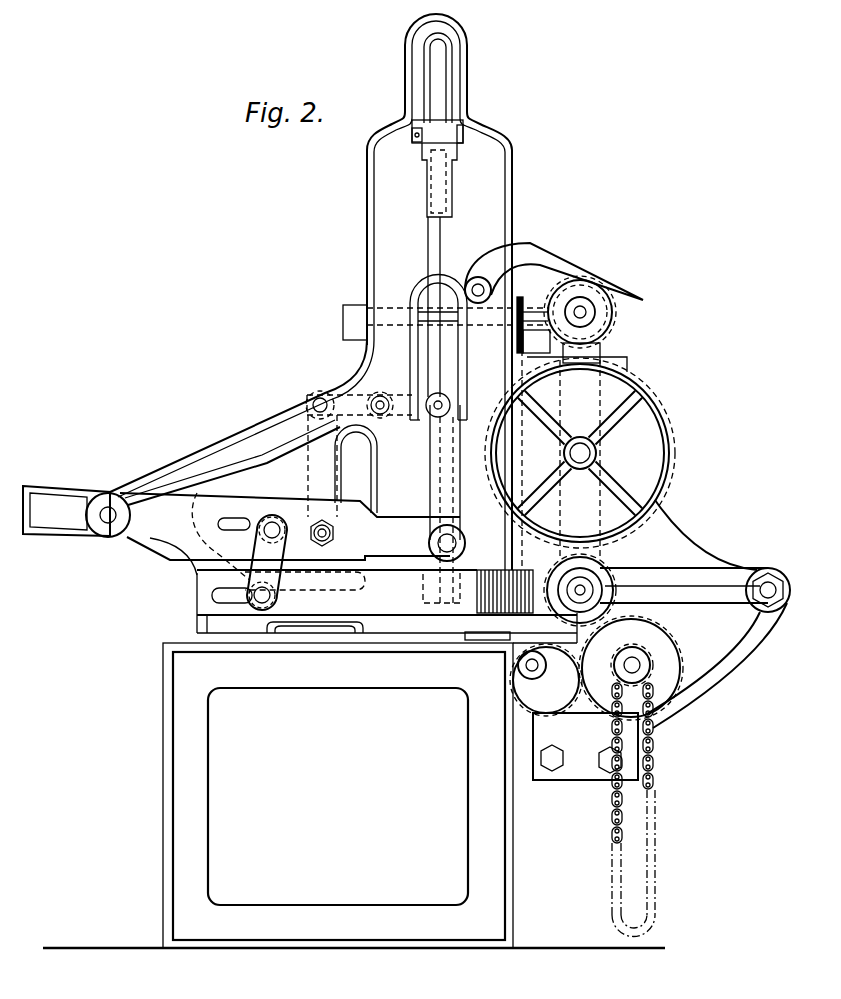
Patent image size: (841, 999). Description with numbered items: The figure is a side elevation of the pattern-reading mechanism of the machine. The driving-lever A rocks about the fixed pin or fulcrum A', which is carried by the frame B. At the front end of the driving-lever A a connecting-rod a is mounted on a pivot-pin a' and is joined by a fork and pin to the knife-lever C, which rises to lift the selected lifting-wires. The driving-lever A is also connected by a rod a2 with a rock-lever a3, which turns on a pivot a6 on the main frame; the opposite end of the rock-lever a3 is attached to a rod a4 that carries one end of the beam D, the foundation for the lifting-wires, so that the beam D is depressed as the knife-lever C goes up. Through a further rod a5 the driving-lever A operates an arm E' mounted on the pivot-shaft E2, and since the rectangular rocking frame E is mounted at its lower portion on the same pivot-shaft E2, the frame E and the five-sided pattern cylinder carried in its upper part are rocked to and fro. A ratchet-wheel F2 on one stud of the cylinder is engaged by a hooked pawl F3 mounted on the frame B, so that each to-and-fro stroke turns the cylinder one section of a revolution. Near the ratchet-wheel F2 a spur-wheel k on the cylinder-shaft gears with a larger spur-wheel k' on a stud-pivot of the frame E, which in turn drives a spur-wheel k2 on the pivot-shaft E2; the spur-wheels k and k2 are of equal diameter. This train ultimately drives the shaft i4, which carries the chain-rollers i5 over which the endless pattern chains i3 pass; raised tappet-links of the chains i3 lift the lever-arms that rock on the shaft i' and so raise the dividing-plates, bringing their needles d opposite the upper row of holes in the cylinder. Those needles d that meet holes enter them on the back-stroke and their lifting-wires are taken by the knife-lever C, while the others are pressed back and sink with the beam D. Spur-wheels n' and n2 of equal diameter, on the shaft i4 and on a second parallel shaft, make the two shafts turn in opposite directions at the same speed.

The frame B is at (490, 176).
The knife-lever C is at (450, 128).
The connecting-rod a is at (387, 348).
The needles d is at (533, 306).
The hooked pawl F3 is at (535, 256).
The ratchet-wheel F2 is at (613, 318).
The spur-wheel k is at (590, 300).
The rock-lever a3 is at (329, 397).
The pivot a6 is at (379, 396).
The rod a2 is at (342, 466).
The rod a4 is at (438, 440).
The beam D is at (440, 521).
The pivot-pin a' is at (464, 544).
The fixed pin or fulcrum A' is at (76, 491).
The driving-lever A is at (290, 540).
The rod a5 is at (290, 562).
The arm E' is at (387, 605).
The rectangular rocking frame E is at (580, 460).
The larger spur-wheel k' is at (600, 453).
The pivot-shaft E2 is at (600, 596).
The spur-wheel k2 is at (603, 580).
The shaft i' is at (719, 614).
The spur-wheel n2 is at (556, 698).
The spur-wheel n' is at (644, 668).
The shaft i4 is at (634, 664).
The endless chain i3 is at (652, 752).
The chain-rollers i5 is at (607, 800).